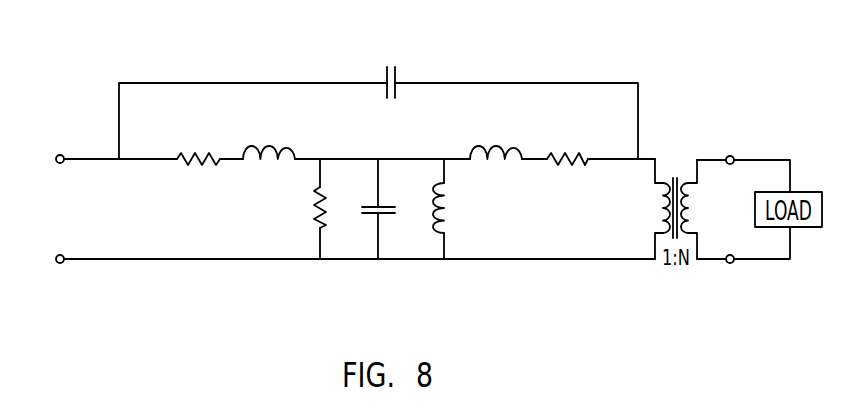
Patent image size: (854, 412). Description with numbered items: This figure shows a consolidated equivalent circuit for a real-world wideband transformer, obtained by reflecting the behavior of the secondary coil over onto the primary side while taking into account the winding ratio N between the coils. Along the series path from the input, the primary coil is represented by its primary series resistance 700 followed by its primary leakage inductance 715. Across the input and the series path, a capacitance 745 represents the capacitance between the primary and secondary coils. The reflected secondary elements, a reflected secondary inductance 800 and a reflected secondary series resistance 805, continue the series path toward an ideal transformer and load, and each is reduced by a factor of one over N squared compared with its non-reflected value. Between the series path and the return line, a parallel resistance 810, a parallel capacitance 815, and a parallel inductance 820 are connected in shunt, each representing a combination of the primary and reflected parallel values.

The primary series resistance 700 is at (201, 150).
The primary leakage inductance 715 is at (296, 150).
The capacitance 745 is at (392, 62).
The reflected secondary inductance 800 is at (490, 160).
The reflected secondary series resistance 805 is at (566, 167).
The parallel resistance 810 is at (302, 227).
The parallel capacitance 815 is at (367, 220).
The parallel inductance 820 is at (427, 230).